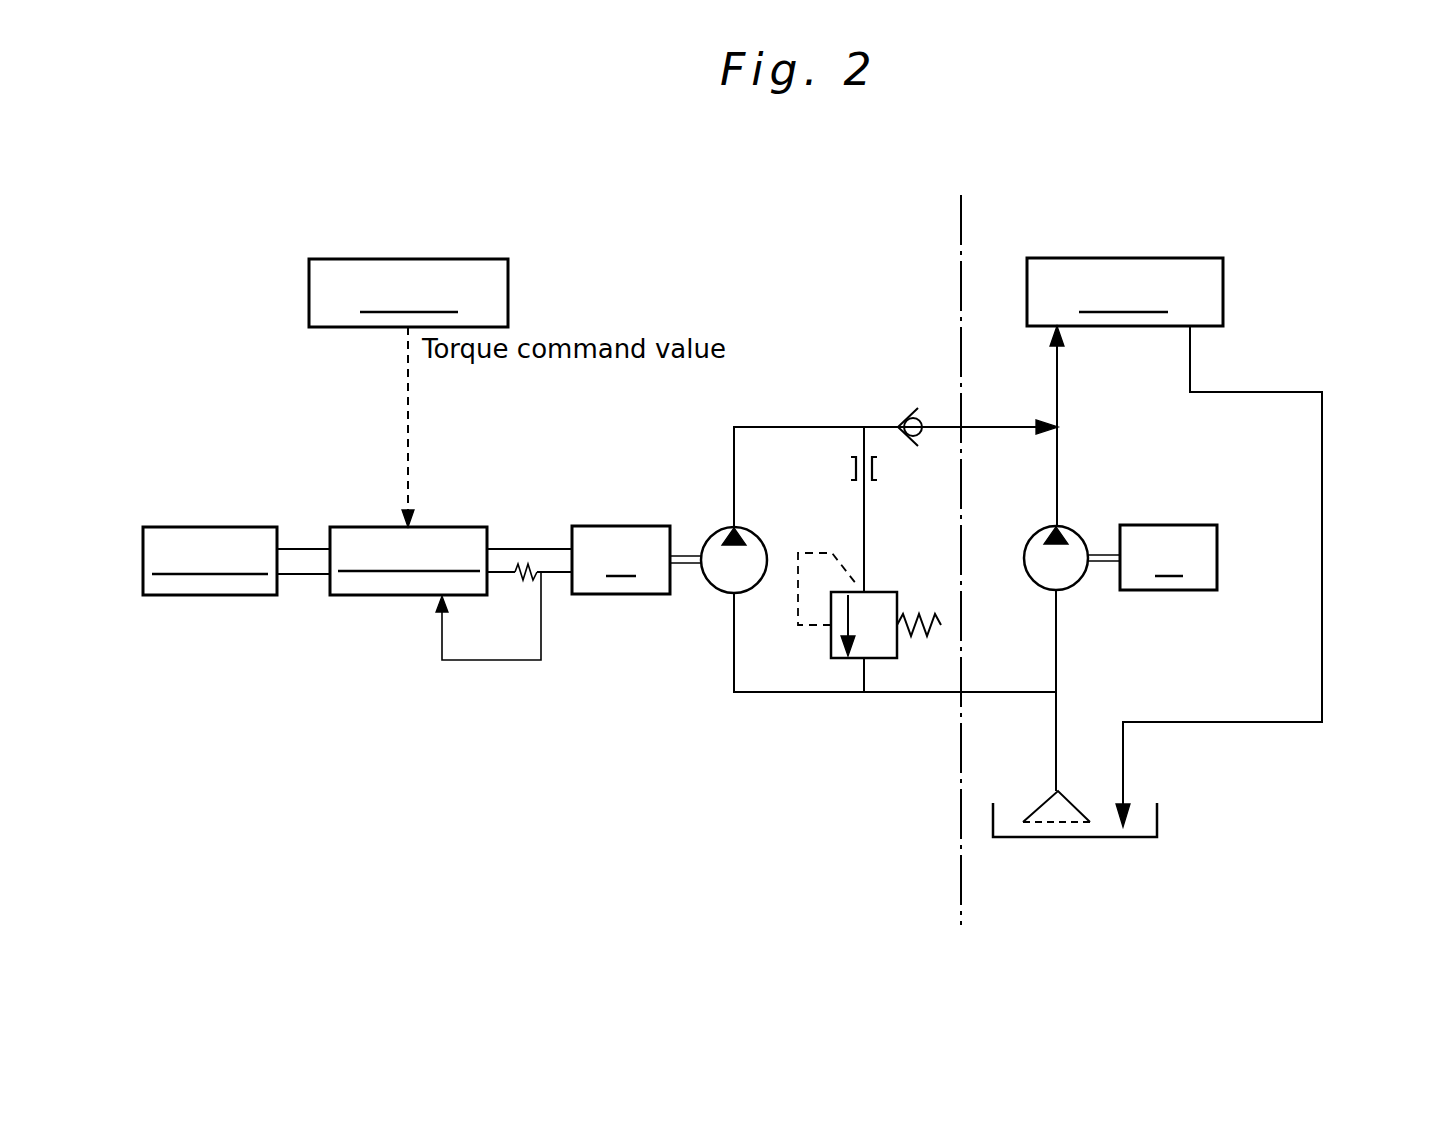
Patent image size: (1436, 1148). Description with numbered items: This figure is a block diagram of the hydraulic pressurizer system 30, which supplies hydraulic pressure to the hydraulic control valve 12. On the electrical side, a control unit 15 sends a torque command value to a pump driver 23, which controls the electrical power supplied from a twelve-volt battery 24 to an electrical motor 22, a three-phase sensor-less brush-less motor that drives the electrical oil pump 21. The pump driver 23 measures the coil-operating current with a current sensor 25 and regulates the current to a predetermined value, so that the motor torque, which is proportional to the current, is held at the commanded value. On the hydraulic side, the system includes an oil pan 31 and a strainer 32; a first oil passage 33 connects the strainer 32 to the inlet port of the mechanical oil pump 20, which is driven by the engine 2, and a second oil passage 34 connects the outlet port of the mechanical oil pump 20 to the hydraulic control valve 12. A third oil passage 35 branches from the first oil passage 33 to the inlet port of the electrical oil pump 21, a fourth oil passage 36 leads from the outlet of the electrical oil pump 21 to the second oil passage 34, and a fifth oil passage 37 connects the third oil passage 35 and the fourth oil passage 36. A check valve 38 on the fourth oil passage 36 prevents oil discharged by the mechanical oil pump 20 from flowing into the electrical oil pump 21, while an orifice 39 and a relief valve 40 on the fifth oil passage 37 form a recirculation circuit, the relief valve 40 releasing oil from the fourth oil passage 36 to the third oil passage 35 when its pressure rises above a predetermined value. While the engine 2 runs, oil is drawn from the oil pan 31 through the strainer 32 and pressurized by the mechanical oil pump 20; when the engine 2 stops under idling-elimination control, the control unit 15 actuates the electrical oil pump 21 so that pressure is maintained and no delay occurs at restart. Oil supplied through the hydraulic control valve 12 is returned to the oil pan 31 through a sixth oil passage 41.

The engine 2 is at (1200, 525).
The hydraulic control valve 12 is at (1181, 258).
The control unit 15 is at (463, 258).
The mechanical oil pump 20 is at (1075, 588).
The electrical oil pump 21 is at (757, 546).
The electrical motor 22 is at (610, 526).
The pump driver 23 is at (363, 595).
The 12V battery 24 is at (224, 527).
The current sensor 25 is at (540, 578).
The hydraulic pressurizer system 30 is at (1352, 360).
The oil pan 31 is at (1135, 838).
The strainer 32 is at (1053, 830).
The first oil passage 33 is at (1058, 694).
The second oil passage 34 is at (1060, 447).
The third oil passage 35 is at (787, 692).
The fourth oil passage 36 is at (786, 427).
The fifth oil passage 37 is at (866, 520).
The check valve 38 is at (918, 412).
The orifice 39 is at (880, 468).
The relief valve 40 is at (888, 594).
The sixth oil passage 41 is at (1324, 520).